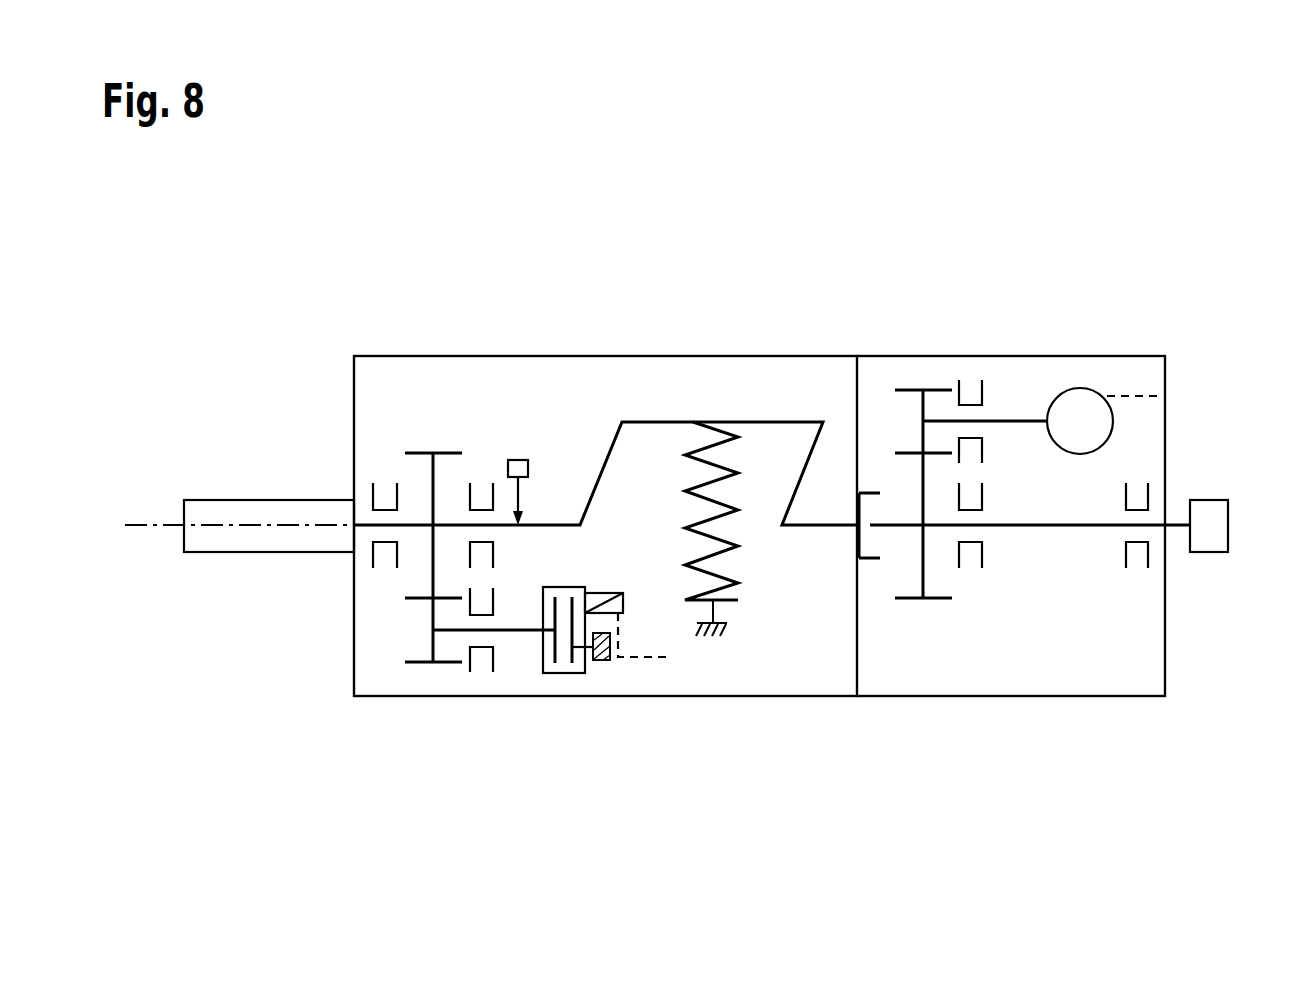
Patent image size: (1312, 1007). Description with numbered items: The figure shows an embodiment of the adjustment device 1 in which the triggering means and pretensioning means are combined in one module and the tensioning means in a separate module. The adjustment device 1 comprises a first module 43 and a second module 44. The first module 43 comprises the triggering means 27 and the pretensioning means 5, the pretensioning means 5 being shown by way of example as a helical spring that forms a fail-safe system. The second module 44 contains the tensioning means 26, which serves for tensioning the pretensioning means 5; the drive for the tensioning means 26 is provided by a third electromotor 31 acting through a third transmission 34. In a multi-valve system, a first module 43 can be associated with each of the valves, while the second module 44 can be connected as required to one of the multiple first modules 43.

The adjustment device 1 is at (1237, 264).
The pretensioning means 5 is at (760, 581).
The tensioning means 26 is at (1039, 380).
The triggering means 27 is at (533, 666).
The third electromotor 31 is at (1073, 387).
The third transmission 34 is at (920, 500).
The first module 43 is at (380, 682).
The second module 44 is at (1078, 682).